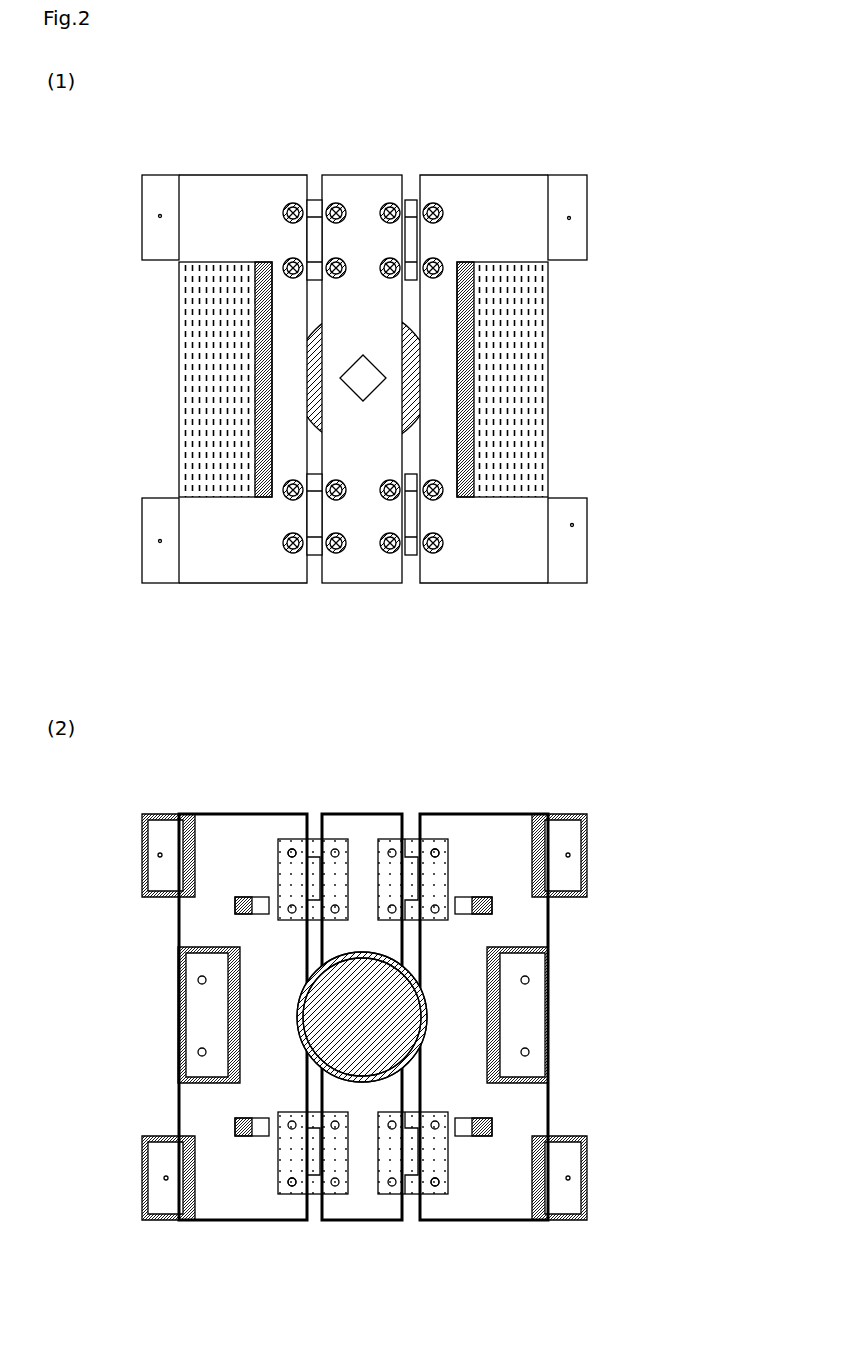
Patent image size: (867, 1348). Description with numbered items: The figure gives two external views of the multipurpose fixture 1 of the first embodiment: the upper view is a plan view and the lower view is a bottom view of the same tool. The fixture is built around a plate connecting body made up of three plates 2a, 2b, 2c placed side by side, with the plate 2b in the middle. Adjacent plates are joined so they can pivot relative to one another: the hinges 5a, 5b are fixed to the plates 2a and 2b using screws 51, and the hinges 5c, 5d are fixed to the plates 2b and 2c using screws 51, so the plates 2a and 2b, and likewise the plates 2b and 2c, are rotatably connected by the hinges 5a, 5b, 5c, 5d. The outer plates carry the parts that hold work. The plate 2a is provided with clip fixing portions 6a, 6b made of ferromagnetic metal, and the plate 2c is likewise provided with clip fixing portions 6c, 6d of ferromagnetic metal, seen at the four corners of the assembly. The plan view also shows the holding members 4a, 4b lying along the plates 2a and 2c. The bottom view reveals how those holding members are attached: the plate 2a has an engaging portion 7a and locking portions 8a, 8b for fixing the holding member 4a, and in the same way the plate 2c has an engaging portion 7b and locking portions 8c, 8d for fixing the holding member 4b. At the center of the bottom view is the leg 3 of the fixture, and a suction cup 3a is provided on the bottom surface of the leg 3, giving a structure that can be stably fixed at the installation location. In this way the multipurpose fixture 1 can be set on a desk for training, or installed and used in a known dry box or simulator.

The multipurpose fixture 1 is at (721, 179).
The plate 2a is at (222, 195).
The plate 2b is at (362, 195).
The plate 2c is at (497, 195).
The leg 3 is at (410, 440).
The suction cup 3a is at (345, 1030).
The holding member 4a is at (205, 380).
The holding member 4b is at (515, 385).
The hinge 5a is at (315, 200).
The hinge 5b is at (315, 556).
The hinge 5c is at (410, 200).
The hinge 5d is at (410, 556).
The screw 51 is at (288, 205).
The clip fixing portion 6a is at (160, 214).
The clip fixing portion 6b is at (160, 535).
The clip fixing portion 6c is at (573, 212).
The clip fixing portion 6d is at (572, 527).
The engaging portion 7a is at (205, 1018).
The engaging portion 7b is at (525, 1015).
The locking portion 8a is at (255, 1137).
The locking portion 8b is at (255, 895).
The locking portion 8c is at (475, 1137).
The locking portion 8d is at (475, 895).